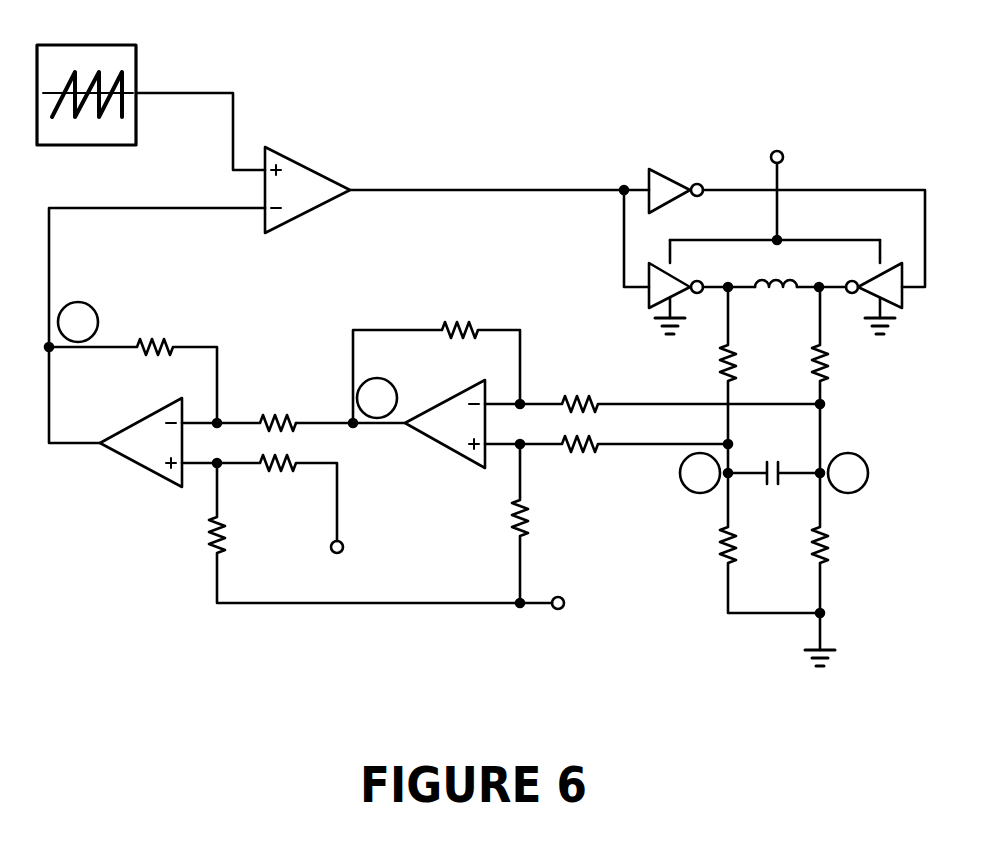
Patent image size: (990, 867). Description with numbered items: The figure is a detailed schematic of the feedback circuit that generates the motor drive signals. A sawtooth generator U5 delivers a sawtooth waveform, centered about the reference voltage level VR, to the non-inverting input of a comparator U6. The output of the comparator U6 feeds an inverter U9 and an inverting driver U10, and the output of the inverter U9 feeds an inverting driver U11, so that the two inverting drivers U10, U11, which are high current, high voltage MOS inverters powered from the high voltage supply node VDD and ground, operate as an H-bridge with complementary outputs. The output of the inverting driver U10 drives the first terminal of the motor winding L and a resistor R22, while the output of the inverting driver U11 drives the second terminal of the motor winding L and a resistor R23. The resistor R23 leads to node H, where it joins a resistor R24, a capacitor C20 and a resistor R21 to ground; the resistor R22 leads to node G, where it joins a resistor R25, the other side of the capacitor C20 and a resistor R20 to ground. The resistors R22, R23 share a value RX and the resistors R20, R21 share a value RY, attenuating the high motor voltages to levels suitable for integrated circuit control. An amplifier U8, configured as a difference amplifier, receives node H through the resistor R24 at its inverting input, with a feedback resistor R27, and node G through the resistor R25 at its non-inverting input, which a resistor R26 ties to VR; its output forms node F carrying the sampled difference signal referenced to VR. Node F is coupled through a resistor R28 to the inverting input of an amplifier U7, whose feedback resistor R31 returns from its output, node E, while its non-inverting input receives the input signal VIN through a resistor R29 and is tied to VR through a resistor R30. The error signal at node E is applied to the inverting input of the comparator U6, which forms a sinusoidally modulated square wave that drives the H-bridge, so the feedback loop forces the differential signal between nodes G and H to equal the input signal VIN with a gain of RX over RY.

The sawtooth generator U5 is at (151, 114).
The comparator U6 is at (338, 239).
The amplifier U7 is at (115, 417).
The amplifier U8 is at (390, 417).
The inverter U9 is at (774, 215).
The inverting driver U10 is at (666, 262).
The inverting driver U11 is at (864, 270).
The motor winding L is at (773, 306).
The capacitor C20 is at (774, 450).
The resistor R20 is at (738, 526).
The resistor R21 is at (847, 569).
The resistor R22 is at (695, 365).
The resistor R23 is at (852, 380).
The resistor R24 is at (652, 383).
The resistor R25 is at (606, 466).
The resistor R26 is at (485, 525).
The resistor R27 is at (436, 352).
The resistor R28 is at (244, 401).
The resistor R29 is at (259, 498).
The resistor R30 is at (330, 533).
The resistor R31 is at (131, 362).
The node E is at (78, 322).
The node F is at (377, 398).
The node G is at (700, 473).
The node H is at (848, 473).
The high voltage supply node VDD is at (775, 178).
The input signal VIN is at (335, 569).
The reference voltage level VR is at (570, 607).